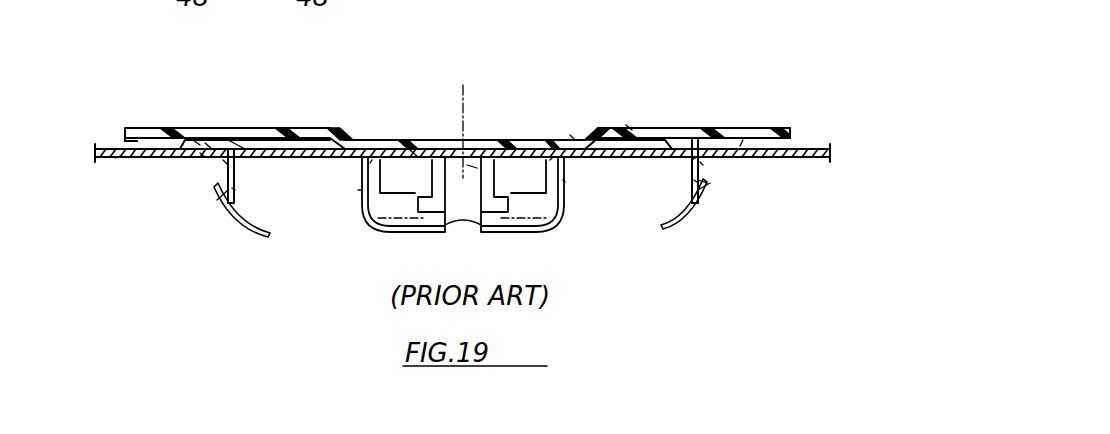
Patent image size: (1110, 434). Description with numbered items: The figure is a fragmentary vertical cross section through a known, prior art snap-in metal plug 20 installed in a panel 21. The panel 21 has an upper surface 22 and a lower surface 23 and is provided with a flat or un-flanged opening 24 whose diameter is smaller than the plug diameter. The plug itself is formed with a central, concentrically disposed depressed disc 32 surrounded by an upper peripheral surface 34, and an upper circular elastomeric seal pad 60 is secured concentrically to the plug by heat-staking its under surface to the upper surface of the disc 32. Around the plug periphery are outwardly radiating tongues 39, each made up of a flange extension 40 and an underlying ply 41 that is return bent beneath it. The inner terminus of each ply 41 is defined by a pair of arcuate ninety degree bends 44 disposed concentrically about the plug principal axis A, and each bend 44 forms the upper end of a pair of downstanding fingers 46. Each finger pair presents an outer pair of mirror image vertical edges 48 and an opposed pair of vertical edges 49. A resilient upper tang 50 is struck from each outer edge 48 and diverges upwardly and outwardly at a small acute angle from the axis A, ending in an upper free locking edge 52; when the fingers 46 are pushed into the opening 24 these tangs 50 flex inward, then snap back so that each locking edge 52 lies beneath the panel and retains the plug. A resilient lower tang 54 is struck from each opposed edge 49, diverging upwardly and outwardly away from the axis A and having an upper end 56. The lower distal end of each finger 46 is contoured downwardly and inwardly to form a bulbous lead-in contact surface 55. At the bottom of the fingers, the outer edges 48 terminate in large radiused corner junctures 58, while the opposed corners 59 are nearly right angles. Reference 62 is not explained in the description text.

The snap-in metal plug 20 is at (330, 170).
The panel 21 is at (97, 150).
The upper surface 22 is at (112, 150).
The lower surface 23 is at (115, 158).
The opening 24 is at (267, 140).
The depressed disc 32 is at (570, 135).
The upper peripheral surface 34 is at (228, 140).
The tongue 39 is at (193, 140).
The flange extension 40 is at (222, 140).
The underlying ply 41 is at (200, 153).
The arcuate ninety degree bend 44 is at (667, 143).
The downstanding finger 46 is at (410, 150).
The outer vertical edge 48 is at (358, 190).
The opposed vertical edge 49 is at (477, 168).
The upper tang 50 is at (370, 163).
The upper free locking edge 52 is at (205, 143).
The lower tang 54 is at (217, 200).
The bulbous lead-in contact surface 55 is at (240, 227).
The upper end 56 is at (223, 160).
The radiused corner juncture 58 is at (547, 227).
The opposed corner 59 is at (463, 212).
The elastomeric seal pad 60 is at (626, 125).
The panel hook 62 is at (122, 133).
The plug principal axis A is at (463, 97).